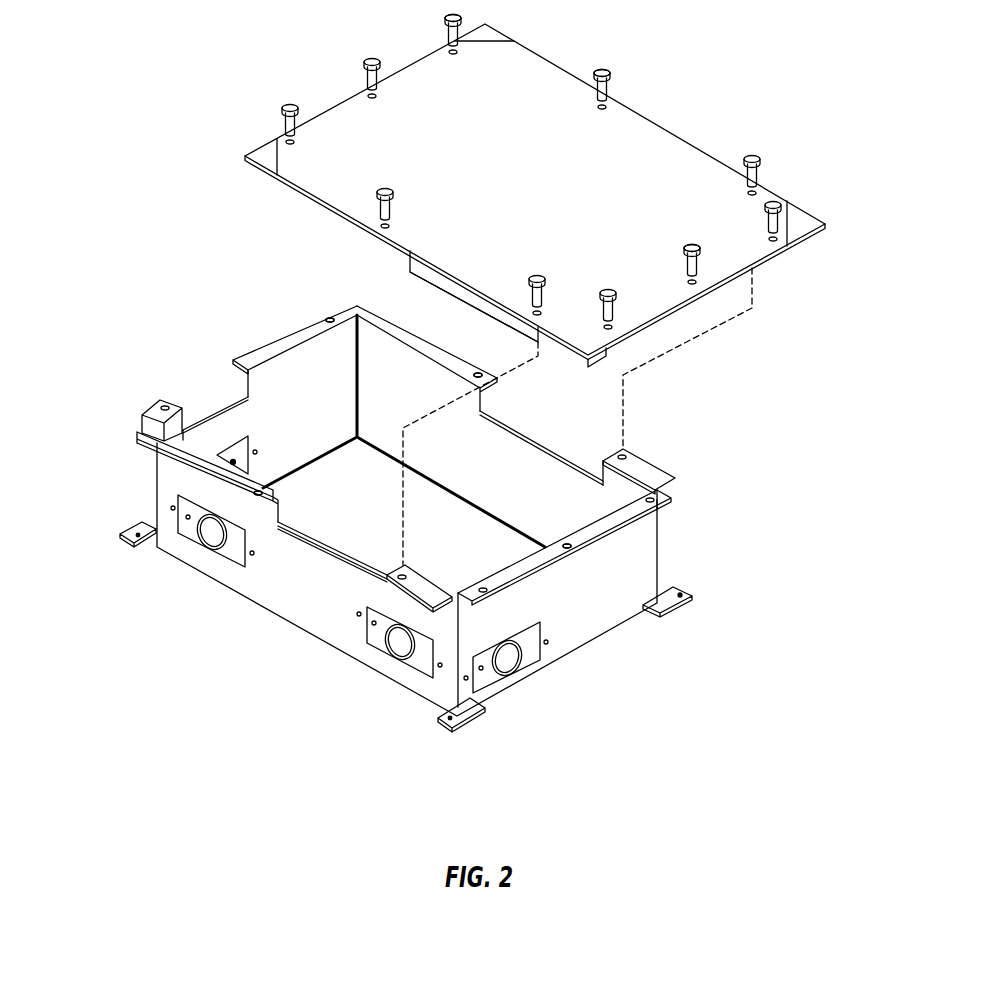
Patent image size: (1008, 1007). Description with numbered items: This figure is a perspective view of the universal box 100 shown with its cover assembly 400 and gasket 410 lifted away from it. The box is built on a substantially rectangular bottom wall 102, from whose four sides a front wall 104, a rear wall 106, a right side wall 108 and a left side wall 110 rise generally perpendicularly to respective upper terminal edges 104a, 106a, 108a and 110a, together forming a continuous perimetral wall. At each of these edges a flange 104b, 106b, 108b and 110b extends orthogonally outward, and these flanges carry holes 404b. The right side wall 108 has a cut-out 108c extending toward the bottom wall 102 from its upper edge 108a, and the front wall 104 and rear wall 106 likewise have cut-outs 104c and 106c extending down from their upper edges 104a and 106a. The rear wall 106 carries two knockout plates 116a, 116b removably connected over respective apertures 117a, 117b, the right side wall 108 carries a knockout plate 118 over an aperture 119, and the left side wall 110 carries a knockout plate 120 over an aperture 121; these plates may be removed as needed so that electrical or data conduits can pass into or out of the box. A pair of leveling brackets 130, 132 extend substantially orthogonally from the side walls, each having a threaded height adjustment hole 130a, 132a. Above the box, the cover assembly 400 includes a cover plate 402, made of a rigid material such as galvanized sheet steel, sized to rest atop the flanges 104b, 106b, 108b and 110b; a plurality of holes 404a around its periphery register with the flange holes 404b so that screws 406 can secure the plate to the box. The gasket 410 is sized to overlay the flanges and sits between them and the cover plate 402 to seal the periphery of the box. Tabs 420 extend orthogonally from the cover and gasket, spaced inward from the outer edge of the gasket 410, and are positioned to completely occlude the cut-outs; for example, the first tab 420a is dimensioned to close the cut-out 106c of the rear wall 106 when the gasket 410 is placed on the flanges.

The universal box 100 is at (162, 314).
The bottom wall 102 is at (355, 440).
The front wall 104 is at (503, 509).
The upper terminal edge 104a is at (652, 482).
The flange 104b is at (640, 465).
The cut-out 104c is at (515, 414).
The rear wall 106 is at (320, 624).
The upper terminal edge 106a is at (420, 576).
The flange 106b is at (158, 428).
The cut-out 106c is at (343, 546).
The right side wall 108 is at (336, 397).
The upper terminal edge 108a is at (283, 347).
The flange 108b is at (300, 332).
The cut-out 108c is at (215, 374).
The left side wall 110 is at (597, 639).
The upper terminal edge 110a is at (652, 511).
The flange 110b is at (660, 500).
The knockout plate 116a is at (218, 556).
The knockout plate 116b is at (398, 670).
The aperture 117a is at (222, 568).
The aperture 117b is at (370, 656).
The knockout plate 118 is at (240, 466).
The aperture 119 is at (228, 456).
The knockout plate 120 is at (515, 662).
The aperture 121 is at (483, 691).
The leveling bracket 130 is at (690, 608).
The threaded height adjustment hole 130a is at (680, 595).
The leveling bracket 132 is at (143, 522).
The threaded height adjustment hole 132a is at (136, 536).
The cover assembly 400 is at (347, 94).
The cover plate 402 is at (670, 142).
The holes 404a is at (452, 46).
The holes 404b is at (330, 316).
The screws 406 is at (285, 128).
The gasket 410 is at (813, 211).
The tabs 420 is at (404, 282).
The first tab 420a is at (478, 303).